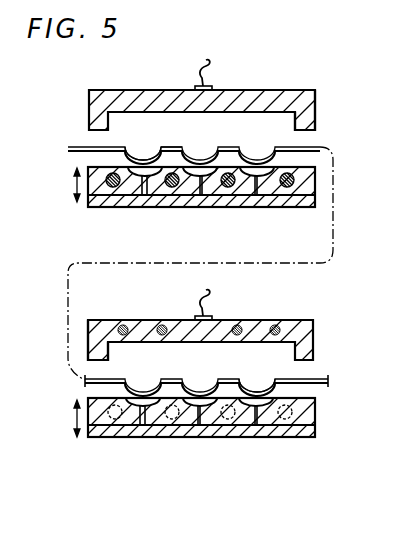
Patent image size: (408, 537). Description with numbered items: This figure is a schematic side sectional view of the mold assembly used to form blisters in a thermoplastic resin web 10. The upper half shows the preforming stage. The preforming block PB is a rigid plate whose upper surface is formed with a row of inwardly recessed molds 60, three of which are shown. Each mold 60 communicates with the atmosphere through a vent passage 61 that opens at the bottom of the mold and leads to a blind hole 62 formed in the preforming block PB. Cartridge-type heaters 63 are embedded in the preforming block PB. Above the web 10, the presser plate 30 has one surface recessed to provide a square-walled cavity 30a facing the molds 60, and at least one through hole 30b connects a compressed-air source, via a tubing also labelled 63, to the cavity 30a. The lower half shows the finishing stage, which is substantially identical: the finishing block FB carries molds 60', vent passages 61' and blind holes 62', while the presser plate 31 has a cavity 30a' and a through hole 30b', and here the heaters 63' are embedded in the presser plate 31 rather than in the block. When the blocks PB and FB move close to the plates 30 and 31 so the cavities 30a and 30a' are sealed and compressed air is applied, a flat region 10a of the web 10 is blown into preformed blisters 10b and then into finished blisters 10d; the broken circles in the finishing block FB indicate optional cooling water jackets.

The thermoplastic resin web 10 is at (333, 235).
The flat portion of film 10a is at (173, 147).
The preformed blister 10b is at (143, 157).
The finished blister 10d is at (255, 390).
The presser plate 30 is at (315, 112).
The square-walled cavity 30a is at (321, 68).
The through hole 30b is at (216, 72).
The square-walled cavity 30a' is at (220, 338).
The through hole 30b' is at (217, 310).
The presser plate 31 is at (104, 330).
The mold 60 is at (245, 212).
The vent passage 61 is at (173, 213).
The blind hole 62 is at (115, 210).
The heater 63 is at (246, 143).
The mold 60' is at (114, 452).
The vent passage 61' is at (254, 455).
The blind hole 62' is at (203, 455).
The heater 63' is at (199, 305).
The preforming block PB is at (315, 185).
The finishing block FB is at (315, 412).